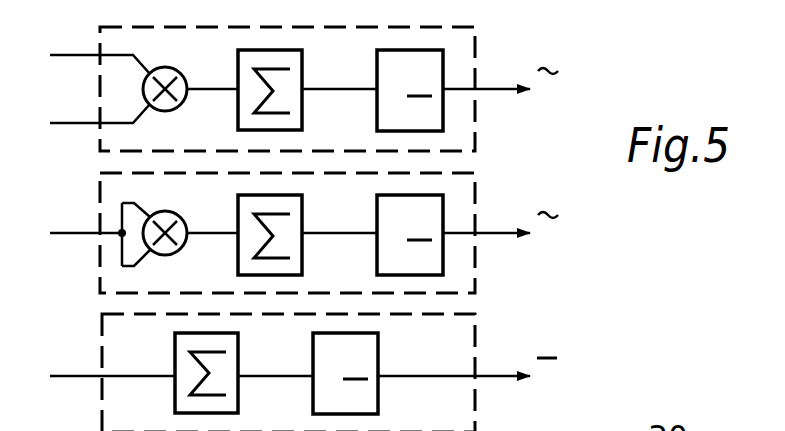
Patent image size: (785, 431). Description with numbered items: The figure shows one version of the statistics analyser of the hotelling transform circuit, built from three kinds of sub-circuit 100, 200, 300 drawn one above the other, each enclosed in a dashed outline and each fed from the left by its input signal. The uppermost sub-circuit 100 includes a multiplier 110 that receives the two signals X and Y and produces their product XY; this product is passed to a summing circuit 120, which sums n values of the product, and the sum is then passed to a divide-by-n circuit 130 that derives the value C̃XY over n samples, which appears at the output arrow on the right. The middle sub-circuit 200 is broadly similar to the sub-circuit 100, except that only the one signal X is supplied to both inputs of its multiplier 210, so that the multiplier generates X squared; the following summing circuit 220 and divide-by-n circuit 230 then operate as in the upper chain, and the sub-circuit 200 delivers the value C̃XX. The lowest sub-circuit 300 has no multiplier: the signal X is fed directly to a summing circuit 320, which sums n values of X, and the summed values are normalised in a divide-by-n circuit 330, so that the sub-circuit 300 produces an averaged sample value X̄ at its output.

The sub-circuit 100 is at (477, 52).
The multiplier 110 is at (187, 81).
The summing circuit 120 is at (302, 80).
The divide-by-n circuit 130 is at (378, 101).
The sub-circuit 200 is at (477, 194).
The multiplier 210 is at (187, 224).
The summing circuit 220 is at (302, 222).
The divide-by-n circuit 230 is at (388, 275).
The sub-circuit 300 is at (477, 350).
The summing circuit 320 is at (238, 362).
The divide-by-n circuit 330 is at (378, 358).